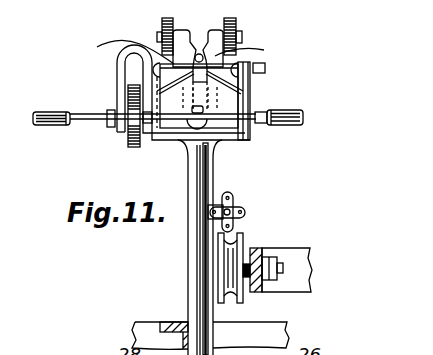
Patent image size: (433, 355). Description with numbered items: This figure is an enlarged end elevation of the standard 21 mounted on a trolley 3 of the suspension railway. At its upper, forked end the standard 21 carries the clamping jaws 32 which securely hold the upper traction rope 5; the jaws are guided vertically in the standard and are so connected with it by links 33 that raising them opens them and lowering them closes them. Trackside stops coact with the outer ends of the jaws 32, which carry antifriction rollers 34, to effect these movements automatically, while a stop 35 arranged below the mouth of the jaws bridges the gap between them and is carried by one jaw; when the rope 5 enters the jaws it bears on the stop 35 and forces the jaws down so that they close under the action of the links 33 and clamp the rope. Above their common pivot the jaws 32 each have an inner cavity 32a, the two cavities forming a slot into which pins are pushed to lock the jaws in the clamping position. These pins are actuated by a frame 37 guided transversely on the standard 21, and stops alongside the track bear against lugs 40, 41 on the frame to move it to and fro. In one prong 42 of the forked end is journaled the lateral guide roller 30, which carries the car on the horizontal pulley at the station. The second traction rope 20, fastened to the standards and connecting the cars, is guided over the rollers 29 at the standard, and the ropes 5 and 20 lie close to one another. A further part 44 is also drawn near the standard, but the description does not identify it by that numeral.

The trolley 3 is at (272, 332).
The upper traction rope 5 is at (245, 48).
The second traction rope 20 is at (237, 203).
The standard 21 is at (197, 273).
The rollers 29 is at (243, 297).
The lateral guide roller 30 is at (130, 148).
The clamping jaws 32 is at (220, 28).
The inner cavity 32a is at (213, 100).
The links 33 is at (163, 140).
The antifriction rollers 34 is at (160, 29).
The stop 35 is at (121, 51).
The frame 37 is at (84, 121).
The lug 40 is at (303, 118).
The lug 41 is at (34, 121).
The prong 42 is at (118, 82).
The cross arm 44 is at (233, 223).